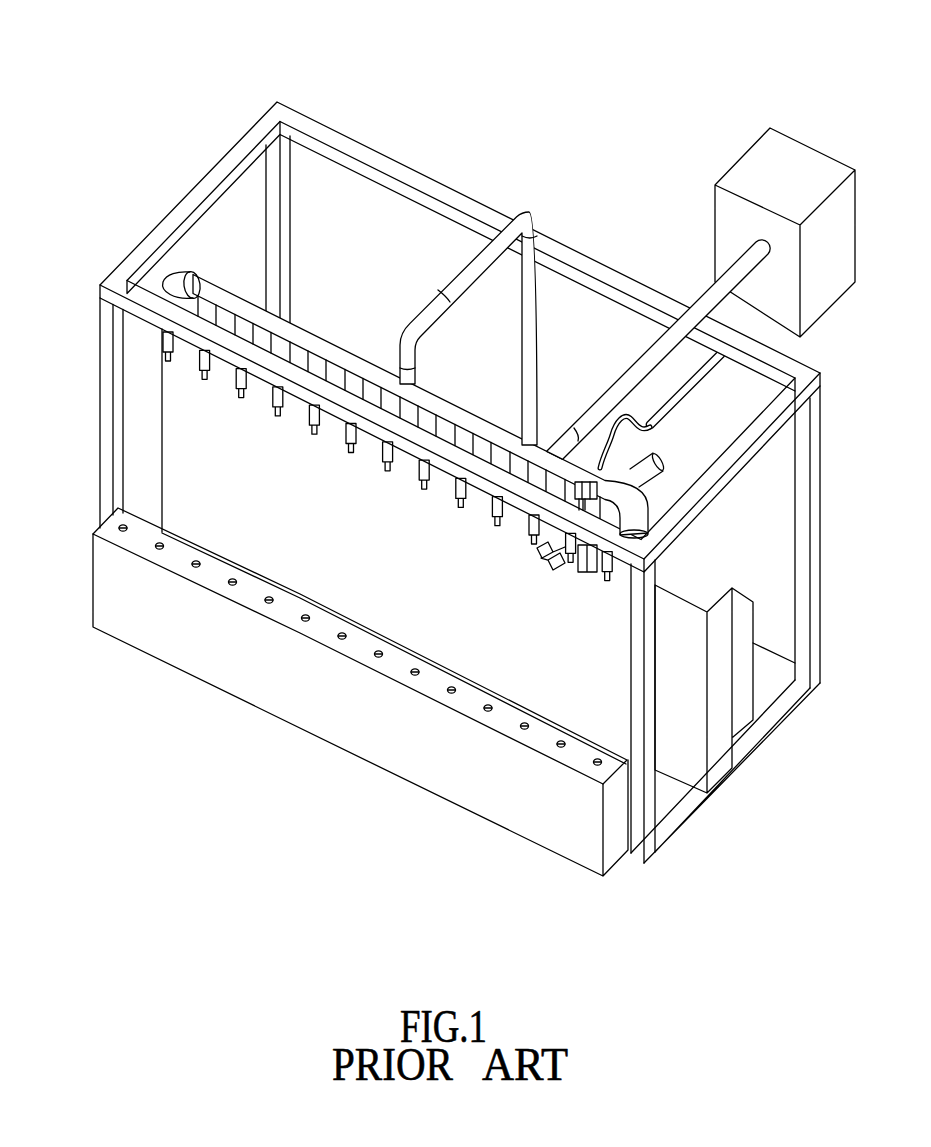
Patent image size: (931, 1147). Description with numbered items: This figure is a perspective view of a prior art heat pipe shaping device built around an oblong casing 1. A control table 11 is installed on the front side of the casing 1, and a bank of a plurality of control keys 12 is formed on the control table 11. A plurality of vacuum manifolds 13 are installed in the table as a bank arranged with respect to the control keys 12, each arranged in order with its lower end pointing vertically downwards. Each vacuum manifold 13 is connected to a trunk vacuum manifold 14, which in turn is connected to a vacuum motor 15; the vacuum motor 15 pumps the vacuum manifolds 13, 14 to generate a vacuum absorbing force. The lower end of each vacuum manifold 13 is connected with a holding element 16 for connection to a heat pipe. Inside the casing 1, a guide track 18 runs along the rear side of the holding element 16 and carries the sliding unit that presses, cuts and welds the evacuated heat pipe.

The casing 1 is at (448, 495).
The control table 11 is at (438, 757).
The control keys 12 is at (533, 740).
The vacuum manifolds 13 is at (606, 580).
The trunk vacuum manifold 14 is at (482, 250).
The vacuum motor 15 is at (797, 163).
The holding element 16 is at (567, 573).
The guide track 18 is at (687, 745).